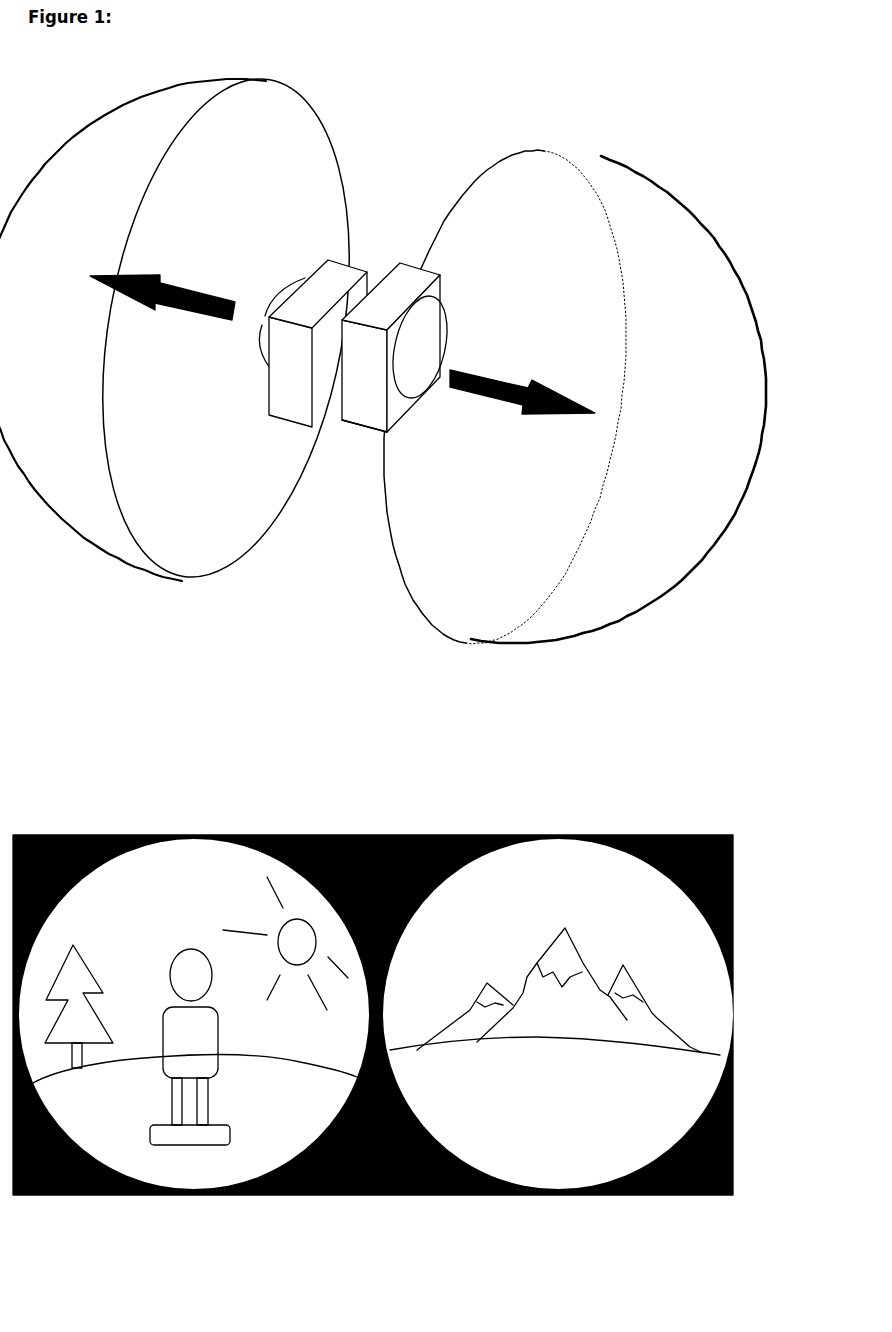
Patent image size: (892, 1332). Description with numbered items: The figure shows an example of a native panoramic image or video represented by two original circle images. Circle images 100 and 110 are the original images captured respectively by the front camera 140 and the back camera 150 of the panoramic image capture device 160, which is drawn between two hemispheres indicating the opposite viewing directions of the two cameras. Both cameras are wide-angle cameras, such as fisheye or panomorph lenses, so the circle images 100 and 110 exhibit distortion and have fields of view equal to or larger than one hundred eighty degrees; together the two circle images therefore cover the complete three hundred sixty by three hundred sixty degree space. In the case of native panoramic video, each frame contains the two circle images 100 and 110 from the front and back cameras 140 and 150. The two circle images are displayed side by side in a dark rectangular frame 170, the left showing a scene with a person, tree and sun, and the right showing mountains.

The circle image 100 is at (527, 887).
The circle image 110 is at (165, 878).
The front camera 140 is at (387, 290).
The back camera 150 is at (345, 278).
The panoramic image capture device 160 is at (350, 440).
The display frame showing stitched images 170 is at (373, 1196).